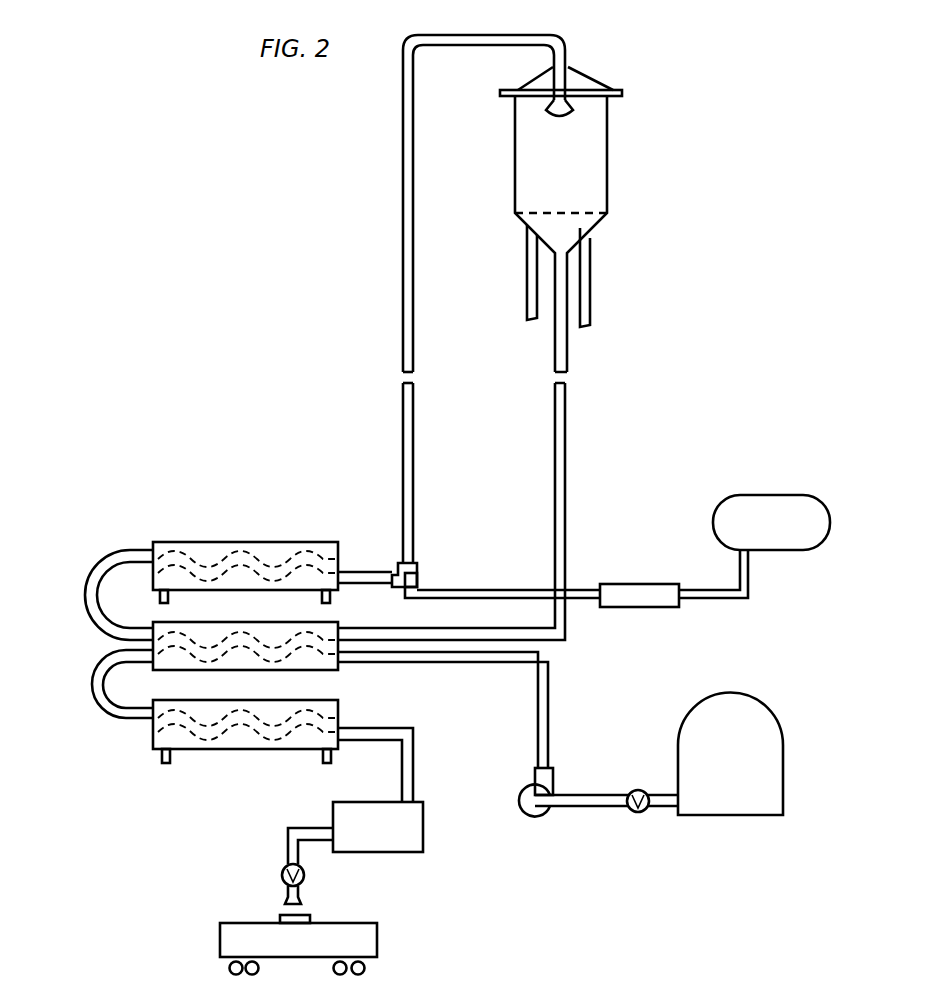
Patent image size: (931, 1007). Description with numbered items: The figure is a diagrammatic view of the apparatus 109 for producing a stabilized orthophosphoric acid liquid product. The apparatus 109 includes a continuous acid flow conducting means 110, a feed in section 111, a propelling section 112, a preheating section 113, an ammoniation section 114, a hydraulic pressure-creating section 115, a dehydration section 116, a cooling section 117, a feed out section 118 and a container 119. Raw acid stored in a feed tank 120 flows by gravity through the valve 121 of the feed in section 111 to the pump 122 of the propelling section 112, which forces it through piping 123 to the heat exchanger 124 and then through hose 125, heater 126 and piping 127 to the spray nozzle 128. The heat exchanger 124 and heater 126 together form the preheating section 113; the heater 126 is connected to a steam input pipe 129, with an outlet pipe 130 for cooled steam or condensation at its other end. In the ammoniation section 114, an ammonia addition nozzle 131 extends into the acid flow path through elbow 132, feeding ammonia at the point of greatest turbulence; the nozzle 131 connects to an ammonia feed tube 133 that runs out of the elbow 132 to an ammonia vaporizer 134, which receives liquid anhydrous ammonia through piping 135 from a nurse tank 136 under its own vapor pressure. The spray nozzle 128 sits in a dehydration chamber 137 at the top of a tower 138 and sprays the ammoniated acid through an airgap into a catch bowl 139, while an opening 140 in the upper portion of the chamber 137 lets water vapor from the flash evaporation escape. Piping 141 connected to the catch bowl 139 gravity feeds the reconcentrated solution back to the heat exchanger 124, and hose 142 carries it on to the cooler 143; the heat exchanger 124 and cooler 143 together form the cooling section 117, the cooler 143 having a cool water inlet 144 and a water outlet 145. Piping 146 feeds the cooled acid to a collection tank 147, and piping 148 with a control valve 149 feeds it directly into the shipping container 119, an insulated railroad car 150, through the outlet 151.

The apparatus 109 is at (727, 254).
The continuous acid flow conducting means 110 is at (470, 710).
The feed in section 111 is at (605, 834).
The propelling section 112 is at (512, 824).
The preheating section 113 is at (97, 578).
The ammoniation section 114 is at (388, 557).
The hydraulic pressure-creating section 115 is at (392, 284).
The dehydration section 116 is at (582, 234).
The cooling section 117 is at (100, 691).
The feed out section 118 is at (399, 749).
The container 119 is at (323, 945).
The feed tank 120 is at (745, 760).
The valve 121 is at (645, 811).
The pump 122 is at (528, 786).
The piping 123 is at (538, 683).
The heat exchanger 124 is at (245, 646).
The hose 125 is at (132, 551).
The heater 126 is at (245, 566).
The piping 127 is at (404, 188).
The spray nozzle 128 is at (557, 119).
The steam input pipe 129 is at (170, 596).
The outlet pipe 130 is at (331, 597).
The ammonia addition nozzle 131 is at (418, 578).
The elbow 132 is at (414, 563).
The ammonia feed tube 133 is at (520, 589).
The ammonia vaporizer 134 is at (639, 596).
The piping 135 is at (749, 571).
The nurse tank 136 is at (782, 532).
The dehydration chamber 137 is at (577, 194).
The tower 138 is at (591, 306).
The catch bowl 139 is at (564, 233).
The opening 140 is at (626, 96).
The piping 141 is at (566, 438).
The hose 142 is at (103, 695).
The cooler 143 is at (245, 723).
The cool water inlet 144 is at (164, 757).
The water outlet 145 is at (326, 758).
The piping 146 is at (368, 728).
The collection tank 147 is at (395, 836).
The piping 148 is at (288, 832).
The control valve 149 is at (282, 877).
The insulated railroad car 150 is at (312, 952).
The outlet 151 is at (301, 898).